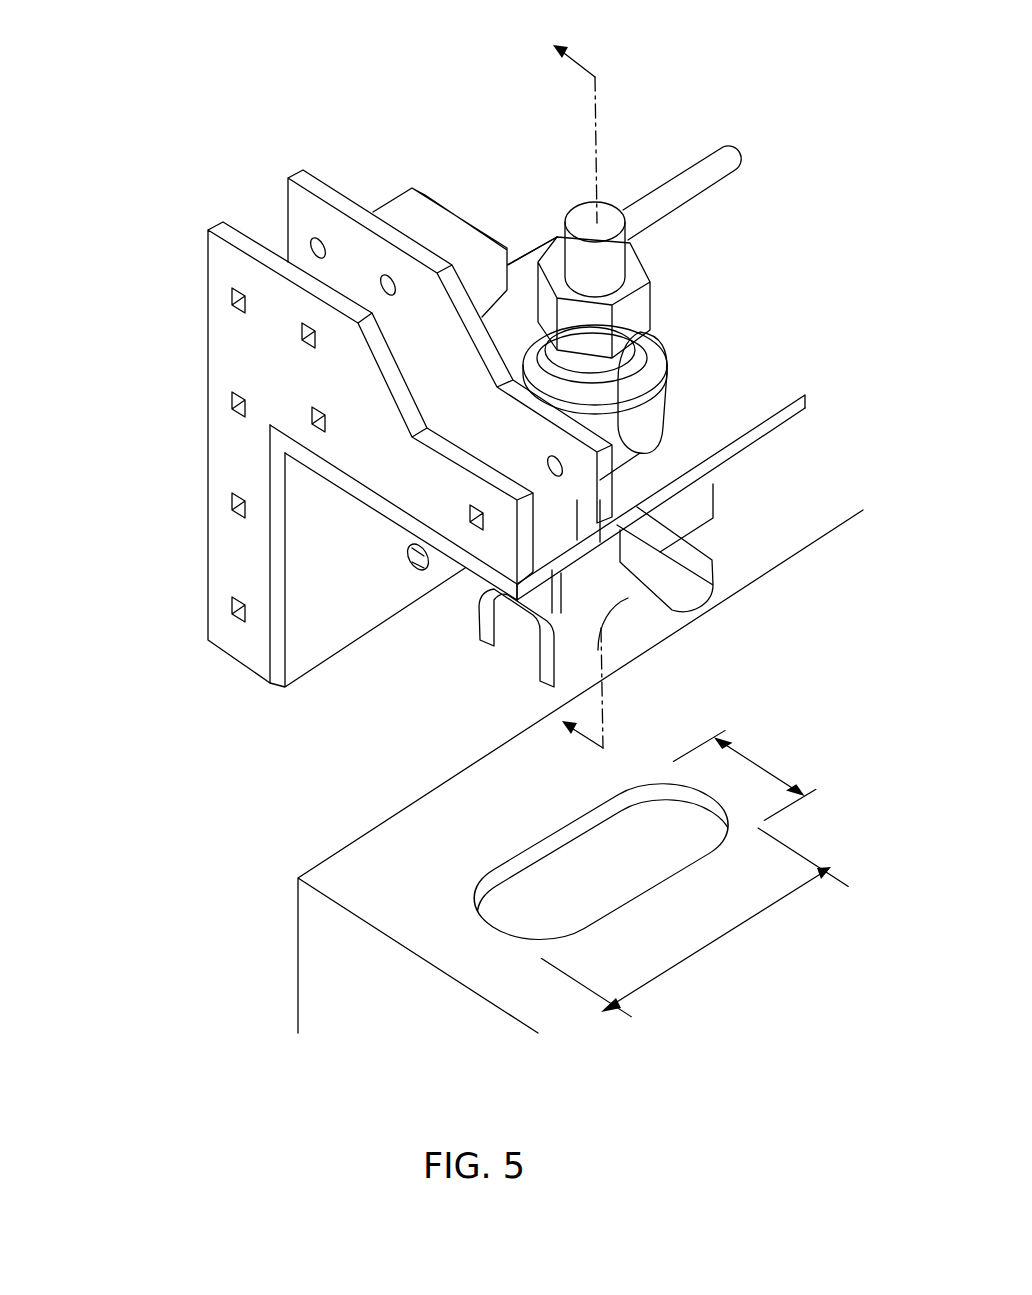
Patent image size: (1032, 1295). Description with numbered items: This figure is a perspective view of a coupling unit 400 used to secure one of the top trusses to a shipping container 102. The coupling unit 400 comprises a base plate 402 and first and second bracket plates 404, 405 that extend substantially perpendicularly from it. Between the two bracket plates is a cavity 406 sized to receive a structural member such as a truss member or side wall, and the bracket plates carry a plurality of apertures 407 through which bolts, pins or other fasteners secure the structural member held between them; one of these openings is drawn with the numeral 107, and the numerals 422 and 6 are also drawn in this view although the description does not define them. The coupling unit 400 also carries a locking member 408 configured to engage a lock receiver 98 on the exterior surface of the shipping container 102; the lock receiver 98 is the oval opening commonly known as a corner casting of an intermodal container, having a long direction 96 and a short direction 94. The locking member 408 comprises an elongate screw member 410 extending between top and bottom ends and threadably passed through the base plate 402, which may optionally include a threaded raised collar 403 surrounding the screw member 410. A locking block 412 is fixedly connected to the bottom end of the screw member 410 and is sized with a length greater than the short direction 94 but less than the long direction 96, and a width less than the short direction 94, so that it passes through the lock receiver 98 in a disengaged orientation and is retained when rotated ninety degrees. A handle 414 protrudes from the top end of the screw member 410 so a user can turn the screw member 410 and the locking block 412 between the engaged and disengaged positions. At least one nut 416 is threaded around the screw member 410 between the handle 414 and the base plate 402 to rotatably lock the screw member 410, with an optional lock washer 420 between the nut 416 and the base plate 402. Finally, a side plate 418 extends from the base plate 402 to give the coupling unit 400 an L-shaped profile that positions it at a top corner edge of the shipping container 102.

The coupling unit 400 is at (308, 104).
The base plate 402 is at (786, 380).
The threaded raised collar 403 is at (648, 412).
The first bracket plate 404 is at (215, 278).
The second bracket plate 405 is at (341, 189).
The cavity 406 is at (260, 209).
The apertures 407 is at (238, 310).
The locking member 408 is at (578, 183).
The screw member 410 is at (688, 337).
The locking block 412 is at (703, 573).
The handle 414 is at (725, 160).
The nut 416 is at (664, 316).
The side plate 418 is at (309, 518).
The lock washer 420 is at (773, 423).
The flange 422 is at (713, 488).
The section line 6- 6 is at (562, 386).
The short direction 94 is at (800, 772).
The long direction 96 is at (752, 920).
The lock receiver 98 is at (498, 868).
The shipping container 102 is at (308, 962).
The square aperture 107 is at (232, 605).